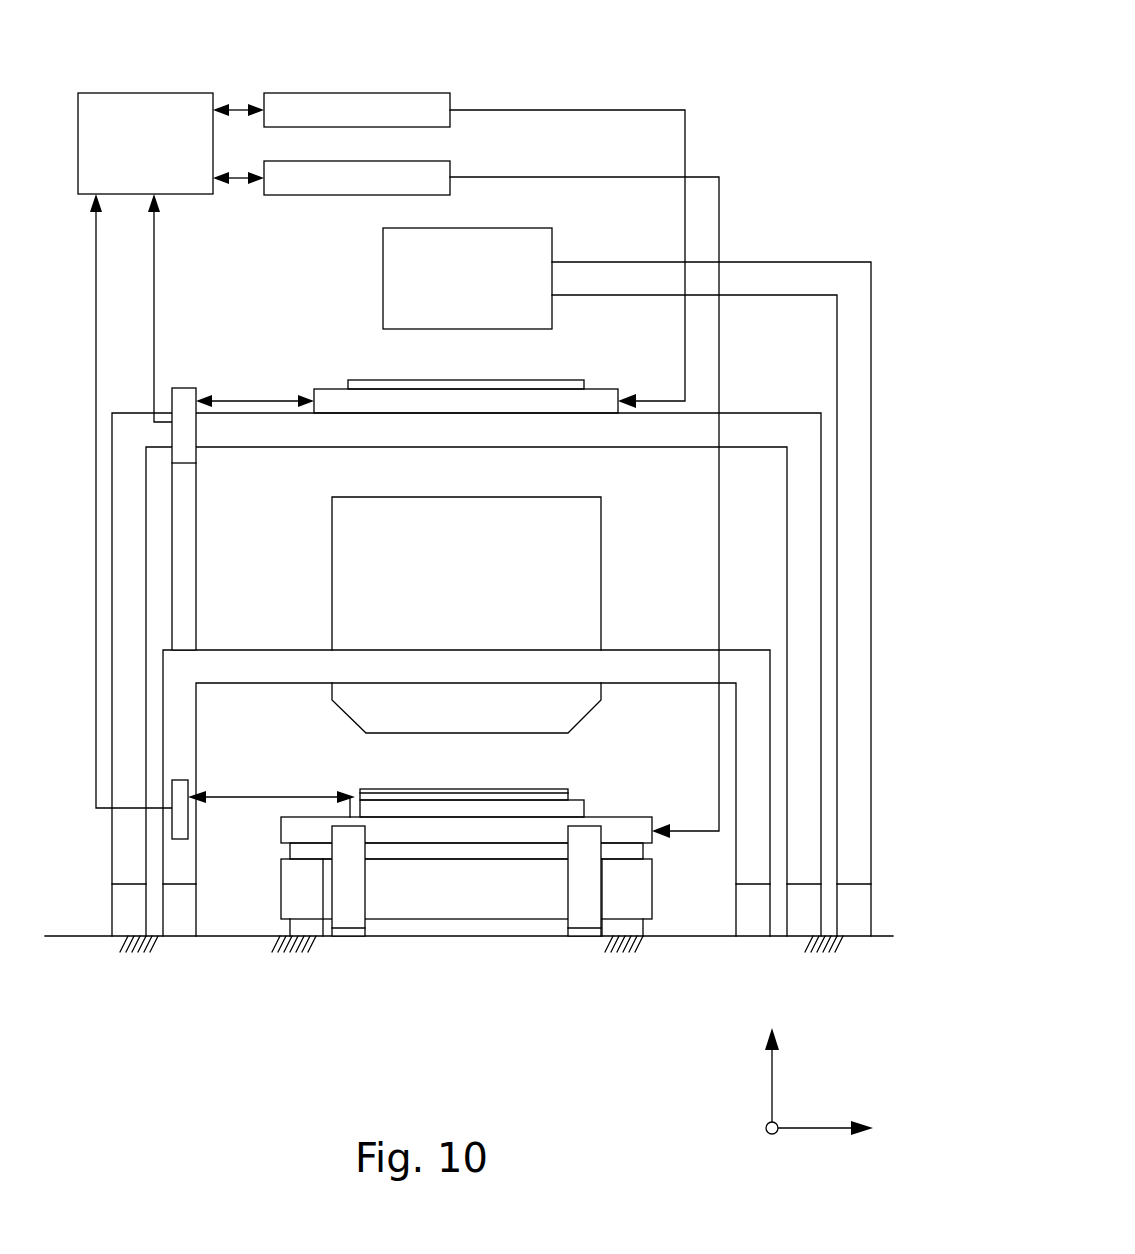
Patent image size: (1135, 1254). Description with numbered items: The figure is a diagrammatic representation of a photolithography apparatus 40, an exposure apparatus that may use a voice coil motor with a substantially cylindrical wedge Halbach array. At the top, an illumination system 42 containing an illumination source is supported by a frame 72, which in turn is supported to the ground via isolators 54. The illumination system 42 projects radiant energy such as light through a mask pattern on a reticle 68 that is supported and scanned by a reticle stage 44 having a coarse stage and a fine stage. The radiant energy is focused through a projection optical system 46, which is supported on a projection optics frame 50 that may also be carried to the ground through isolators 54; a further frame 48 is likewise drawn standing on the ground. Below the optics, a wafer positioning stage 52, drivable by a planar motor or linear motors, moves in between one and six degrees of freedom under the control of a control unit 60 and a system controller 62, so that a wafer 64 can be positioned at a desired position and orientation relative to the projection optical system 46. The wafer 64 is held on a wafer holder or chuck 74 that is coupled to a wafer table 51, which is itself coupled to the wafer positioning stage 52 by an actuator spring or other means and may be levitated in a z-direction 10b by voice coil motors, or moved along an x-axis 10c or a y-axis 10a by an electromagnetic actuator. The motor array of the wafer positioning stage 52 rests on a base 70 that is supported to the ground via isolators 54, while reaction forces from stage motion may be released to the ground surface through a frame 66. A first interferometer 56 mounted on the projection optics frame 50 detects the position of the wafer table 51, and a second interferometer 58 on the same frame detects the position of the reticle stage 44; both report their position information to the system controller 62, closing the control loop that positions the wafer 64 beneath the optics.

The photolithography apparatus 40 is at (784, 32).
The illumination system 42 is at (477, 300).
The reticle stage 44 is at (610, 388).
The projection optical system 46 is at (477, 605).
The apparatus frame 48 is at (748, 423).
The projection optics frame 50 is at (235, 660).
The wafer table 51 is at (352, 793).
The wafer positioning stage 52 is at (632, 815).
The isolators 54 is at (128, 927).
The first interferometer 56 is at (186, 790).
The second interferometer 58 is at (188, 388).
The control unit 60 is at (399, 93).
The system controller 62 is at (173, 93).
The wafer 64 is at (555, 789).
The frame 66 is at (357, 921).
The reticle 68 is at (548, 380).
The base 70 is at (317, 912).
The frame 72 is at (757, 272).
The wafer holder or chuck 74 is at (575, 799).
The y-axis 10a is at (818, 1128).
The z-direction 10b is at (772, 1075).
The x-axis 10c is at (767, 1122).